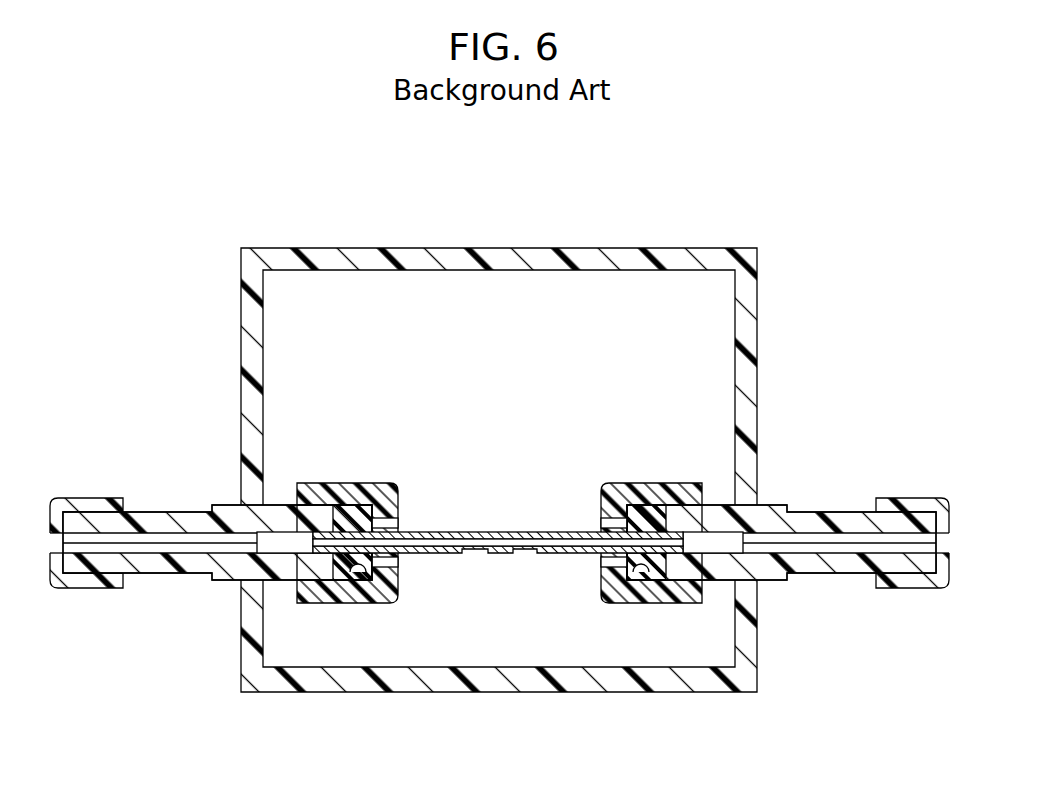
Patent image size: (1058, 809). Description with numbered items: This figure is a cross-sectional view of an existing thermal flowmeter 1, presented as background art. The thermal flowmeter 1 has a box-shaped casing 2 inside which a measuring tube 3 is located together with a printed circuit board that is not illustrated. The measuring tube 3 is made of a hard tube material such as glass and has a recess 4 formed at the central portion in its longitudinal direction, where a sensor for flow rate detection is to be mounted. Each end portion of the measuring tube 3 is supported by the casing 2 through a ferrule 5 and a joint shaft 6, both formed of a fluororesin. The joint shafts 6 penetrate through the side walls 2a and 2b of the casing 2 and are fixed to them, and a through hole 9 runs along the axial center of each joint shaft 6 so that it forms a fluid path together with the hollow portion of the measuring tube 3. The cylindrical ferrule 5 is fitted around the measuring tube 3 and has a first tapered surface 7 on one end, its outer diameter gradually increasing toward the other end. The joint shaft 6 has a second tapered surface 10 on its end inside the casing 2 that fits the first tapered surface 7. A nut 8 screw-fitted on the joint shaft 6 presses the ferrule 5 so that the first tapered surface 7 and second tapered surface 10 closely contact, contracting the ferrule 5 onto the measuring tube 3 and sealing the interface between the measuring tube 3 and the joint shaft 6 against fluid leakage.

The thermal flowmeter 1 is at (207, 179).
The casing 2 is at (517, 433).
The side wall 2a is at (250, 310).
The side wall 2b is at (748, 302).
The measuring tube 3 is at (477, 531).
The recess 4 is at (523, 550).
The ferrule 5 is at (365, 500).
The joint shaft 6 is at (157, 580).
The first tapered surface 7 is at (335, 500).
The nut 8 is at (388, 483).
The through hole 9 is at (163, 540).
The second tapered surface 10 is at (363, 603).